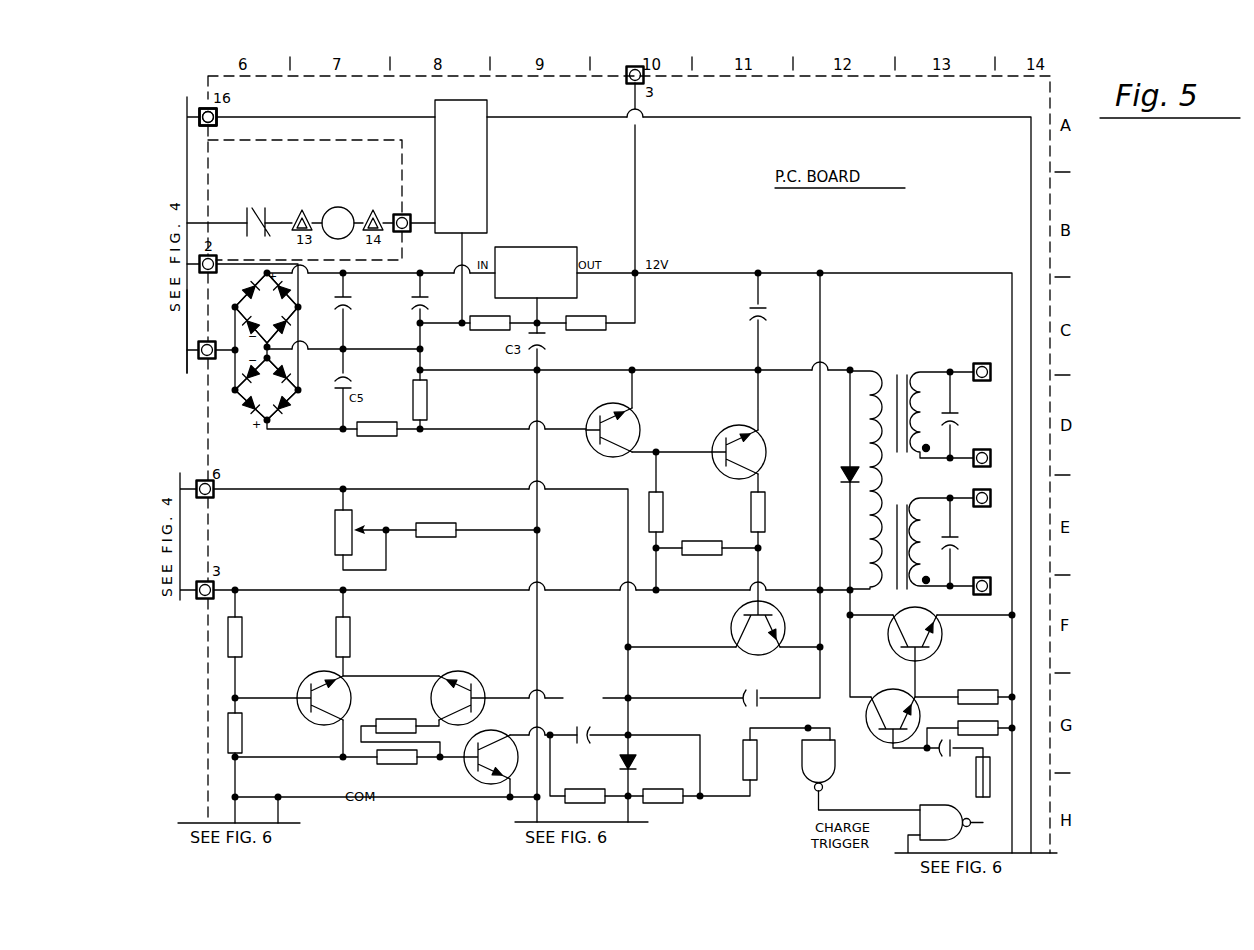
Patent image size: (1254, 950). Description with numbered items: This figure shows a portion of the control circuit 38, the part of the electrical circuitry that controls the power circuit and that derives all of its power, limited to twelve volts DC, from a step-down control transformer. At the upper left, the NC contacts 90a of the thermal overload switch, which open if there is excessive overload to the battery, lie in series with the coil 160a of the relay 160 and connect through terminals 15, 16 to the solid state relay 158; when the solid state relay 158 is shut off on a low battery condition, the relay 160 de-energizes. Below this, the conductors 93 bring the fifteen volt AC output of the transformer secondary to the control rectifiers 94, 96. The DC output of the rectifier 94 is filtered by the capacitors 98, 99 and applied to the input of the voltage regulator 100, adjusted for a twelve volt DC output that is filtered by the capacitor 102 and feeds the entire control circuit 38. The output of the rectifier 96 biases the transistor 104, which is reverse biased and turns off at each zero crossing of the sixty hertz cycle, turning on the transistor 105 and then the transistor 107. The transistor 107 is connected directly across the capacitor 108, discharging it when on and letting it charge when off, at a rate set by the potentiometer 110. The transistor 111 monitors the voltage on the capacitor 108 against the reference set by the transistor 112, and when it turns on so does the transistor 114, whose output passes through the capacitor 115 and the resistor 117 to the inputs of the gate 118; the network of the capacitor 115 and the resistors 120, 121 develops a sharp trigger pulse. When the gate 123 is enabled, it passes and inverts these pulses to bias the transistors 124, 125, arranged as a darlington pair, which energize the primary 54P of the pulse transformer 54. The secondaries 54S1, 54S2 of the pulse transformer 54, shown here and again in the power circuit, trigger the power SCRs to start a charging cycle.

The control circuit 38 is at (165, 72).
The NC contacts 90a is at (258, 208).
The relay coil 160a is at (330, 207).
The relay 160 is at (348, 208).
The terminal 15 is at (408, 215).
The terminal 16 is at (216, 108).
The solid state relay 158 is at (487, 188).
The voltage regulator 100 is at (542, 254).
The capacitor 102 is at (752, 310).
The conductors 93 is at (187, 345).
The control rectifier 94 is at (300, 309).
The control rectifier 96 is at (298, 387).
The capacitor 98 is at (355, 304).
The capacitor 99 is at (426, 306).
The potentiometer 110 is at (335, 530).
The transistor 104 is at (637, 430).
The transistor 105 is at (761, 452).
The transistor 107 is at (733, 625).
The capacitor 108 is at (746, 690).
The transistor 111 is at (463, 673).
The transistor 112 is at (345, 698).
The transistor 114 is at (470, 780).
The capacitor 115 is at (574, 726).
The resistor 117 is at (745, 750).
The gate 118 is at (806, 775).
The resistor 120 is at (582, 789).
The resistor 121 is at (665, 789).
The gate 123 is at (945, 795).
The transistor 124 is at (883, 694).
The transistor 125 is at (934, 646).
The pulse transformer 54 is at (888, 468).
The pulse transformer primary 54P is at (852, 378).
The pulse transformer secondary 54S1 is at (937, 590).
The pulse transformer secondary 54S2 is at (936, 376).